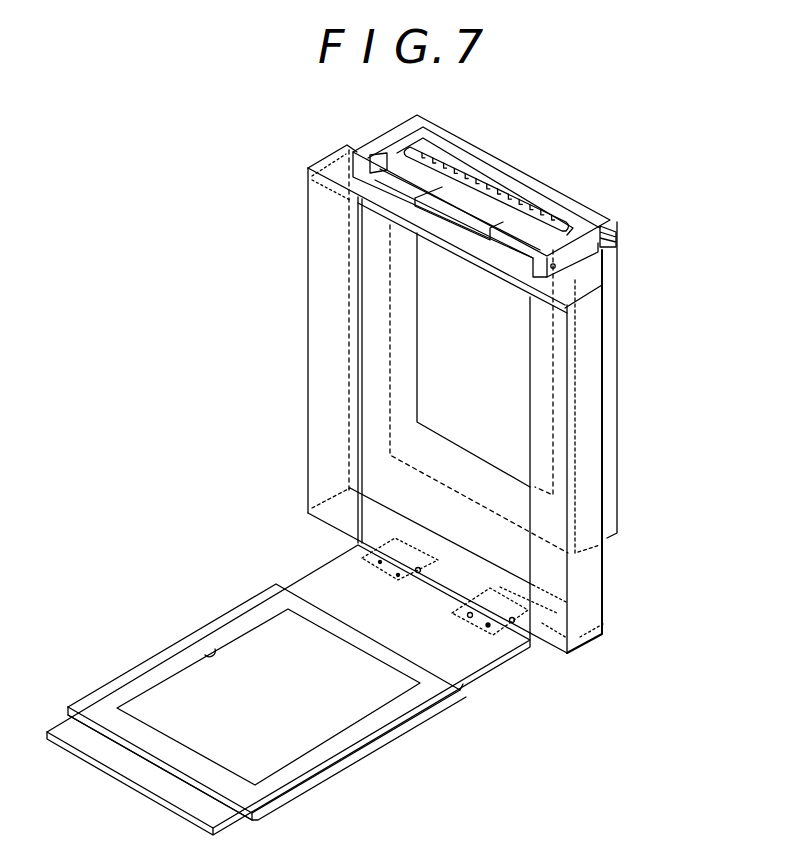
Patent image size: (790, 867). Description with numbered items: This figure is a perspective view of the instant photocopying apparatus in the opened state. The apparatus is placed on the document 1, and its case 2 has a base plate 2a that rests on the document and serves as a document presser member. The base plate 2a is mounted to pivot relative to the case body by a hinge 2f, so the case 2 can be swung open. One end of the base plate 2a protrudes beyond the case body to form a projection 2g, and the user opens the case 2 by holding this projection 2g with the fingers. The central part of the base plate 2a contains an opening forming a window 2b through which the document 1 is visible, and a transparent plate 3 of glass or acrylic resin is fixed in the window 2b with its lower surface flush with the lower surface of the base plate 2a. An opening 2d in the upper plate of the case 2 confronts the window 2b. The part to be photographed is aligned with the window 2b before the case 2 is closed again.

The document 1 is at (332, 777).
The case 2 is at (586, 364).
The base plate 2a is at (463, 652).
The window 2b is at (210, 652).
The opening 2d is at (417, 322).
The hinge 2f is at (362, 548).
The projection 2g is at (150, 780).
The transparent plate 3 is at (360, 700).